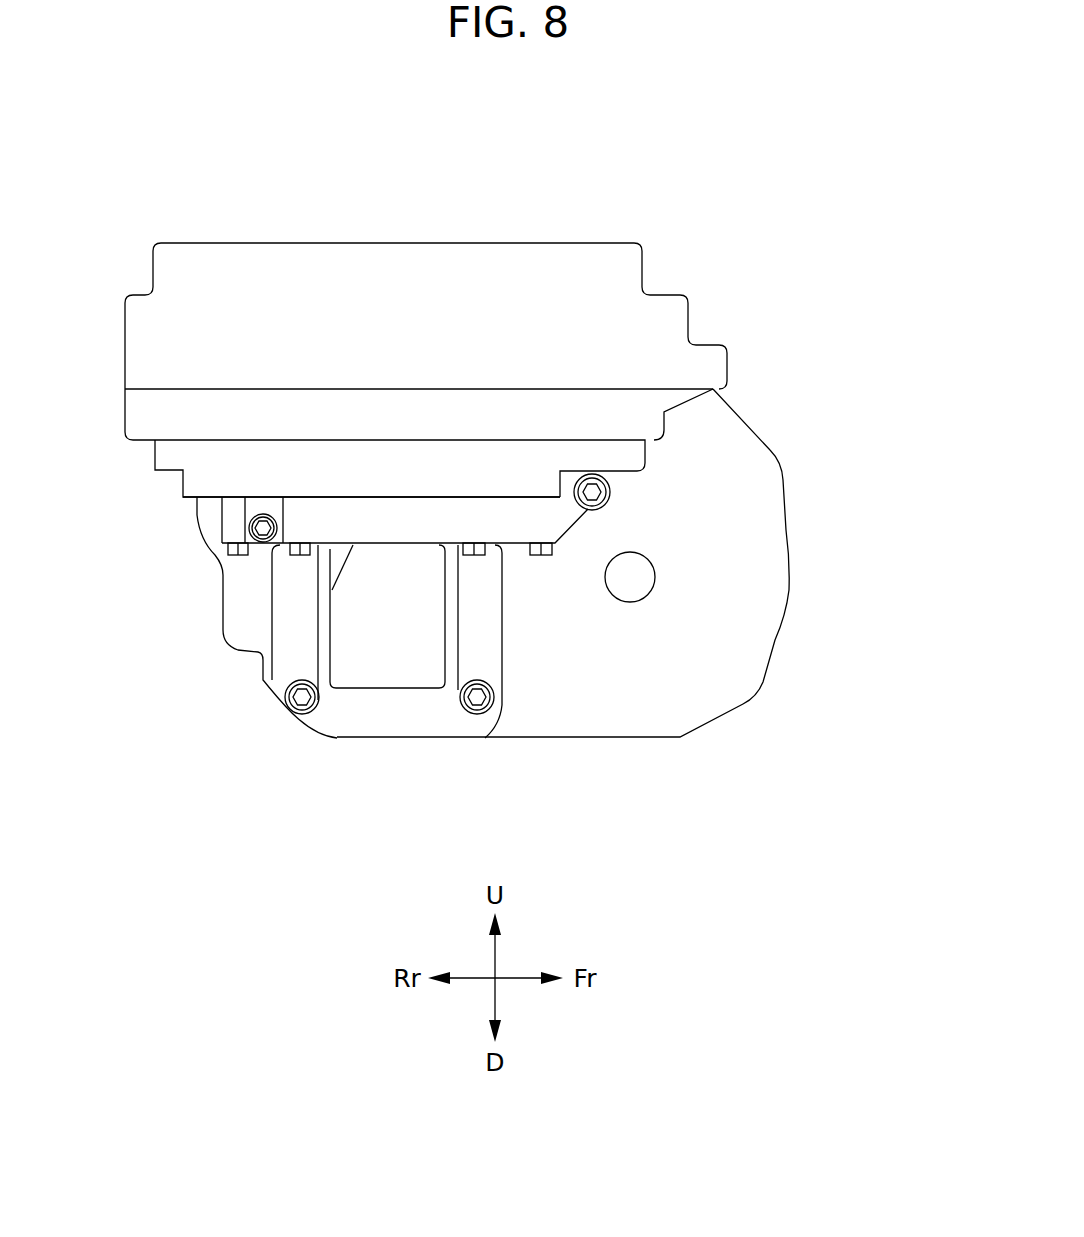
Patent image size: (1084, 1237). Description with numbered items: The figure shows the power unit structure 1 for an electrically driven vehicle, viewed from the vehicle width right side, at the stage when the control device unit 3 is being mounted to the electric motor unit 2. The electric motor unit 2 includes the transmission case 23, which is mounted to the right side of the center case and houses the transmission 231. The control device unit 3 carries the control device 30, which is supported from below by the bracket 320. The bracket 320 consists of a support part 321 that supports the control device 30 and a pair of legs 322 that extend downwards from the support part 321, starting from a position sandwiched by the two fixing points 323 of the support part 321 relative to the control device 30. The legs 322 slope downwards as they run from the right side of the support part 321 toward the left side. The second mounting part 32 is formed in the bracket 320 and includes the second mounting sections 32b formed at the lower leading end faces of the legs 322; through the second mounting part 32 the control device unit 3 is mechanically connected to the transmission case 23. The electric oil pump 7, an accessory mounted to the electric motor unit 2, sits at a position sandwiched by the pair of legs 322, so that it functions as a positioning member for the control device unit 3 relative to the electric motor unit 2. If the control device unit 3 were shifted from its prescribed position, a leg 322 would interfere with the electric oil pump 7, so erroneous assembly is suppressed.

The power unit structure 1 is at (796, 154).
The electric motor unit 2 is at (810, 404).
The control device unit 3 is at (347, 212).
The control device 30 is at (450, 258).
The transmission case 23 is at (727, 493).
The transmission 231 is at (670, 622).
The bracket 320 is at (255, 606).
The support part 321 is at (382, 513).
The leg 322 is at (283, 667).
The fixing point 323 is at (277, 540).
The second mounting part 32 is at (389, 697).
The second mounting section 32b is at (293, 713).
The electric oil pump 7 is at (403, 670).